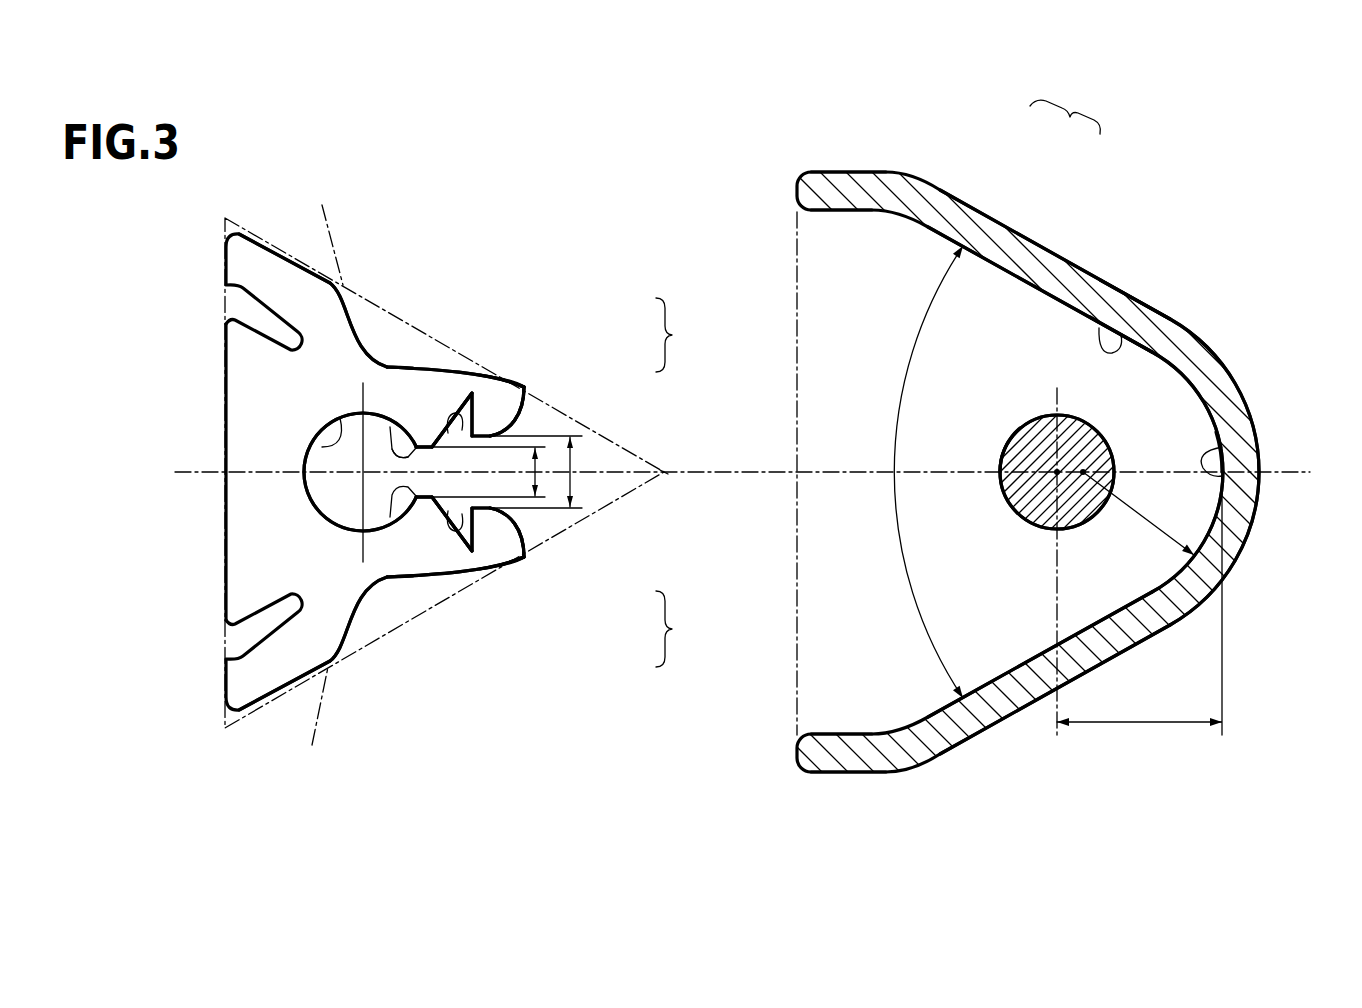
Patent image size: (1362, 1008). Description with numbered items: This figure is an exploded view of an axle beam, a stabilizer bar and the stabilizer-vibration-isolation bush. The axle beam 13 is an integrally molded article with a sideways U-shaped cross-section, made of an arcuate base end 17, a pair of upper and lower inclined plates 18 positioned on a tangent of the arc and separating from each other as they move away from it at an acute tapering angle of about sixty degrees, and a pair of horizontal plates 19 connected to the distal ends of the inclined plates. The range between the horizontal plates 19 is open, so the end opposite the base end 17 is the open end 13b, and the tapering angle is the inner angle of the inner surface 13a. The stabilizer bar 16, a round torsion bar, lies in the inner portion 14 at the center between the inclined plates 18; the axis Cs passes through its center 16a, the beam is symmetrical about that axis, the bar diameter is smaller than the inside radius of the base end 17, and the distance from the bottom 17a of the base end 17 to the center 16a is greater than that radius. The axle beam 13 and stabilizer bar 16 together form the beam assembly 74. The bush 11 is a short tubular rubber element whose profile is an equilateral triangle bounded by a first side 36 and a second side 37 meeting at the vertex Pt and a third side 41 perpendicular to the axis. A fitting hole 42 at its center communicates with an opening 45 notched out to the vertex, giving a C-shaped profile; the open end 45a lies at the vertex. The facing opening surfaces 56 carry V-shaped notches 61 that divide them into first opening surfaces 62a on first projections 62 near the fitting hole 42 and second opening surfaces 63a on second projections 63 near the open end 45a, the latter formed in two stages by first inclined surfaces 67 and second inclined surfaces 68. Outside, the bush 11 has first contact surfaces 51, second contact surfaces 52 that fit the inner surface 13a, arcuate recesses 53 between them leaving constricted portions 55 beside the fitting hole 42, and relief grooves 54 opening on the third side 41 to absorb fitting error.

The bush 11 is at (537, 195).
The axle beam 13 is at (968, 197).
The inner surface of the axle beam 13a is at (1122, 334).
The open end 13b is at (795, 672).
The inner portion 14 is at (980, 588).
The stabilizer bar 16 is at (1035, 412).
The center of the stabilizer bar 16a is at (1020, 448).
The base end 17 is at (1227, 410).
The bottom of the base end 17a is at (1222, 478).
The inclined plate 18 is at (1075, 270).
The horizontal plate 19 is at (860, 172).
The first side 36 is at (322, 230).
The second side 37 is at (309, 721).
The third side 41 is at (224, 393).
The fitting hole 42 is at (308, 457).
The opening 45 is at (398, 481).
The open end of the opening 45a is at (512, 432).
The first contact surface 51 is at (491, 373).
The second contact surface 52 is at (280, 247).
The recess 53 is at (360, 337).
The relief groove 54 is at (253, 303).
The constricted portion 55 is at (380, 384).
The opening surface 56 is at (400, 500).
The notch 61 is at (465, 414).
The first projection 62 is at (428, 413).
The first opening surface 62a is at (390, 427).
The second projection 63 is at (492, 407).
The second opening surface 63a is at (689, 482).
The first inclined surface 67 is at (523, 414).
The second inclined surface 68 is at (497, 437).
The beam assembly 74 is at (1057, 303).